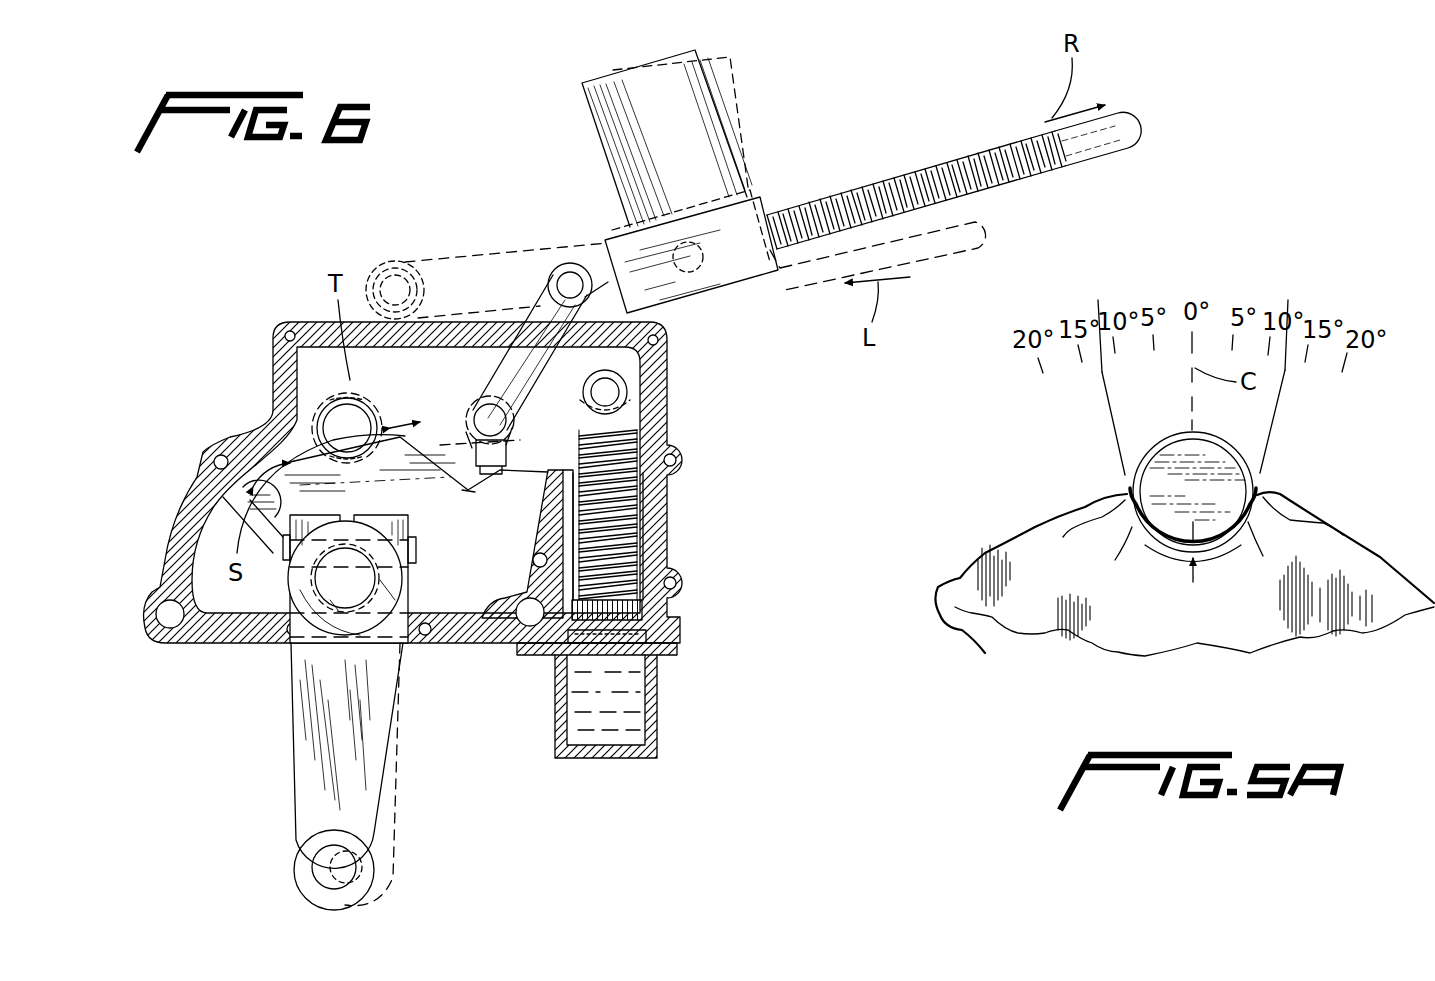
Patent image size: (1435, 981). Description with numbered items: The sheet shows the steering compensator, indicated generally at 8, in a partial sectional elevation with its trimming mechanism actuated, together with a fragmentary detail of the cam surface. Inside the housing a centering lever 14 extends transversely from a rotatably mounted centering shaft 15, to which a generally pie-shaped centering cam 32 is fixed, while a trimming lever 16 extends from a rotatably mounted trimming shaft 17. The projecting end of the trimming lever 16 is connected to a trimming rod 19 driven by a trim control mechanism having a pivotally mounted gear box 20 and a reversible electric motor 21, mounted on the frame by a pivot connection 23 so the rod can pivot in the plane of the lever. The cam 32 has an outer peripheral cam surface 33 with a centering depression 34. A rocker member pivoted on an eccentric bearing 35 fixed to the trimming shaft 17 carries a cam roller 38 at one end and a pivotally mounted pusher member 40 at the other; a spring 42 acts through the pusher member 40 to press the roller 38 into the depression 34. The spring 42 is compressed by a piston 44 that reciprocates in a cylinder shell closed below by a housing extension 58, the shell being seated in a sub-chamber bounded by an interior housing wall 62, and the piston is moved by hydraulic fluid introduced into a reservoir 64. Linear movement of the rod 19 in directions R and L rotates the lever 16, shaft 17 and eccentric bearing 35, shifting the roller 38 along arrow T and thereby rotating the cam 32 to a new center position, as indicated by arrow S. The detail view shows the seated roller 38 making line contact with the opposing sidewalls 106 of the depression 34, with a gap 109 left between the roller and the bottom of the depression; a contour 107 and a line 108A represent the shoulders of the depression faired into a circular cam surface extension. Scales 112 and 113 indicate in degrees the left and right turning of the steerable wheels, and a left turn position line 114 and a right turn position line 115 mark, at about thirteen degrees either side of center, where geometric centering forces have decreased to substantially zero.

In FIG. 6, the actuator housing 8 is at (244, 384).
In FIG. 6, the centering lever 14 is at (292, 822).
In FIG. 6, the centering shaft 15 is at (292, 640).
In FIG. 6, the trimming lever 16 is at (546, 250).
In FIG. 6, the trimming shaft 17 is at (493, 470).
In FIG. 6, the trimming rod 19 is at (945, 152).
In FIG. 6, the gear box 20 is at (713, 232).
In FIG. 6, the reversible electric motor 21 is at (602, 125).
In FIG. 6, the pivot connection 23 is at (704, 265).
In FIG. 6, the centering cam 32 is at (452, 528).
In FIG. 5A, the centering cam 32 is at (1199, 575).
In FIG. 6, the cam surface 33 is at (520, 478).
In FIG. 5A, the centering depression 34 is at (1163, 550).
In FIG. 6, the eccentric bearing 35 is at (596, 447).
In FIG. 6, the cam roller 38 is at (322, 398).
In FIG. 5A, the cam roller 38 is at (1168, 452).
In FIG. 6, the pusher member 40 is at (545, 433).
In FIG. 6, the spring 42 is at (640, 558).
In FIG. 6, the piston 44 is at (545, 662).
In FIG. 6, the housing extension 58 is at (657, 736).
In FIG. 6, the interior housing wall 62 is at (530, 535).
In FIG. 6, the reservoir 64 is at (623, 725).
In FIG. 5A, the sidewalls 106 is at (1115, 560).
In FIG. 5A, the contour line 107 is at (1199, 531).
In FIG. 5A, the circular cam surface extension line 108A is at (1184, 589).
In FIG. 5A, the gap 109 is at (1195, 578).
In FIG. 5A, the scale 112 is at (1098, 300).
In FIG. 5A, the scale 113 is at (1292, 296).
In FIG. 5A, the left turn position line 114 is at (1110, 410).
In FIG. 5A, the right turn position line 115 is at (1272, 420).